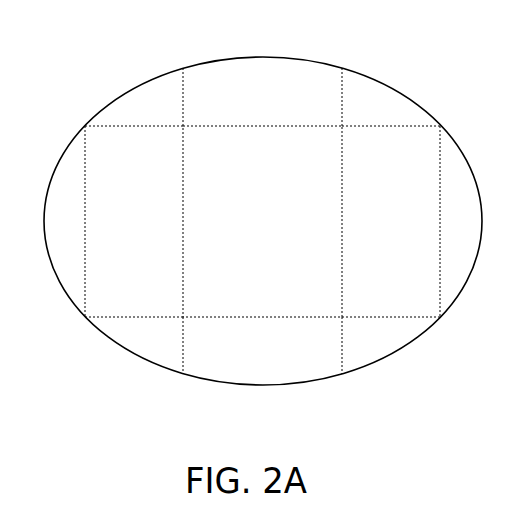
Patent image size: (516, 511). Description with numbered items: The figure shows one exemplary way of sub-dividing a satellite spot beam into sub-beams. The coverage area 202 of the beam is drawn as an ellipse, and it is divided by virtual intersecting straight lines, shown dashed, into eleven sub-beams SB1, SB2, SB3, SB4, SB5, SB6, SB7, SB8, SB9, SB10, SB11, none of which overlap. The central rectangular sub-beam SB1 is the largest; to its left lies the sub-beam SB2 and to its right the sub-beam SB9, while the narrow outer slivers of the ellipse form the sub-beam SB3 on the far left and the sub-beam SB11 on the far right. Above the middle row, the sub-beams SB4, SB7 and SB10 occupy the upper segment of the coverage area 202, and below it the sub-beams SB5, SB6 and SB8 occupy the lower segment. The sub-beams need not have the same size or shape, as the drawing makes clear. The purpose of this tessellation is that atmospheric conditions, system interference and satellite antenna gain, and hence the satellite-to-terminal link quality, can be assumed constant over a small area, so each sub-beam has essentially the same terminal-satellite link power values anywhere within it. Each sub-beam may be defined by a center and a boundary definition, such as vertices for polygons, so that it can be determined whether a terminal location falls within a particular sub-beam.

The coverage area 202 is at (397, 90).
The sub-beam SB1 is at (262, 221).
The sub-beam SB2 is at (134, 221).
The sub-beam SB3 is at (64, 221).
The sub-beam SB4 is at (134, 97).
The sub-beam SB5 is at (134, 345).
The sub-beam SB6 is at (262, 351).
The sub-beam SB7 is at (262, 91).
The sub-beam SB8 is at (391, 345).
The sub-beam SB9 is at (391, 221).
The sub-beam SB10 is at (391, 97).
The sub-beam SB11 is at (460, 221).